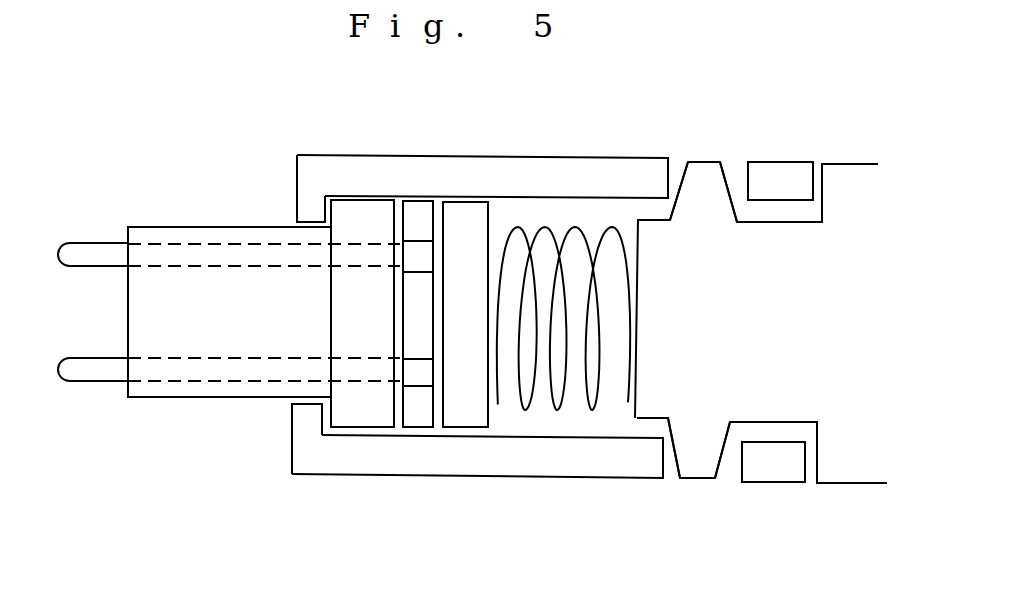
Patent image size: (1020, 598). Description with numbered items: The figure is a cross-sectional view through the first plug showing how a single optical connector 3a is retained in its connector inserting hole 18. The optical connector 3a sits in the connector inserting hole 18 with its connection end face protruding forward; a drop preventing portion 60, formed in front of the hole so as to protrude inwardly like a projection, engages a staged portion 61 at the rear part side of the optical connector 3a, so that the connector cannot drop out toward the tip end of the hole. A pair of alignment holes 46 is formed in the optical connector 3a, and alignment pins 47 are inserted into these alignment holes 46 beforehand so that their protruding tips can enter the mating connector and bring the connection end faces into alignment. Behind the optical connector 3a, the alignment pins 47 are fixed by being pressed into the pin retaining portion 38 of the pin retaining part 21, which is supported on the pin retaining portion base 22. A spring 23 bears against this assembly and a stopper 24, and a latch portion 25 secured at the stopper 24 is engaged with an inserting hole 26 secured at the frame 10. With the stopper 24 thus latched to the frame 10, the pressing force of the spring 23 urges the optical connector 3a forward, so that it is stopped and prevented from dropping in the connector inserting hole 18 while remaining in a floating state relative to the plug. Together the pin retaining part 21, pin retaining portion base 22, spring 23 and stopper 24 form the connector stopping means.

The first optical connector 3a is at (213, 240).
The frame 10 is at (388, 157).
The connector inserting hole 18 is at (552, 414).
The pin retaining part 21 is at (410, 430).
The pin retaining portion base 22 is at (466, 428).
The spring 23 is at (592, 414).
The stopper 24 is at (768, 370).
The latch portion 25 is at (707, 182).
The inserting hole 26 is at (678, 168).
The pin retaining portion 38 is at (418, 241).
The alignment hole 46 is at (125, 243).
The alignment pin 47 is at (77, 246).
The drop preventing portion 60 is at (310, 213).
The staged portion 61 is at (322, 208).